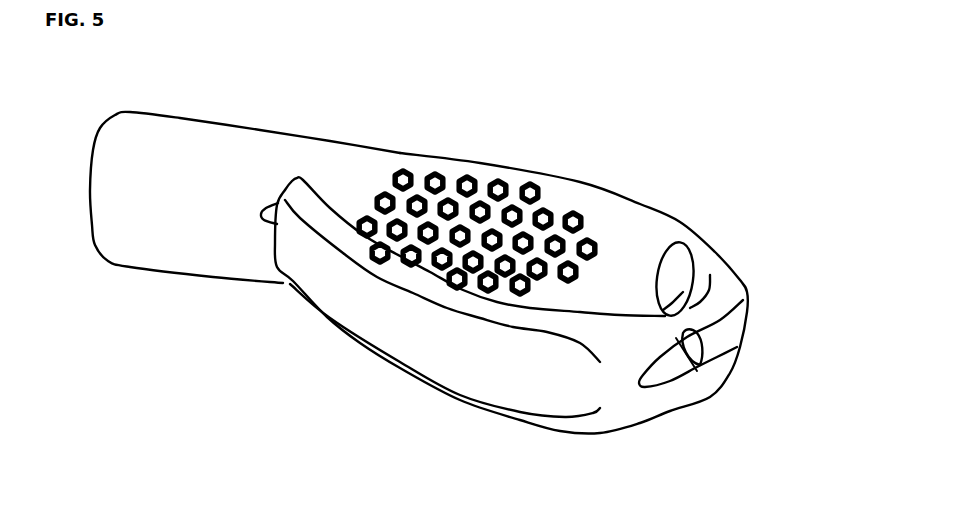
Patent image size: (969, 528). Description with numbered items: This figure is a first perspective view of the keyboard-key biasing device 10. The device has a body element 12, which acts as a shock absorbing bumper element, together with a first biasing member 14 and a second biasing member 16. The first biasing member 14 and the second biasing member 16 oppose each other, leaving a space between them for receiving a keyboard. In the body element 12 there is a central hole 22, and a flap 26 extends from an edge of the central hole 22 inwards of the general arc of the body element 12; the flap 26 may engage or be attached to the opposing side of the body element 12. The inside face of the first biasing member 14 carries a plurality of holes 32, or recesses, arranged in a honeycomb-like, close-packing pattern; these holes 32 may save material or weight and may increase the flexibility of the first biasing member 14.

The keyboard-key biasing device 10 is at (680, 128).
The body element 12 is at (712, 397).
The first biasing member 14 is at (260, 127).
The second biasing member 16 is at (377, 320).
The central hole 22 is at (712, 350).
The flap 26 is at (677, 252).
The holes 32 is at (477, 170).